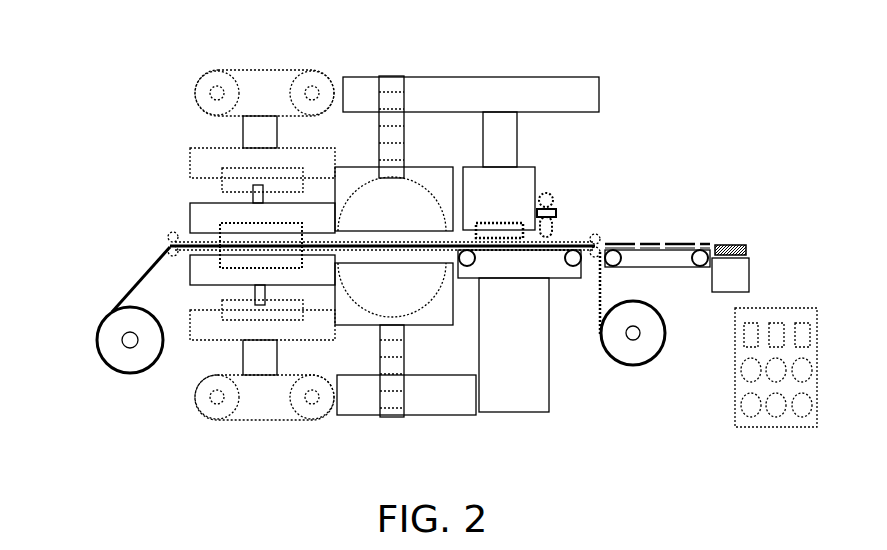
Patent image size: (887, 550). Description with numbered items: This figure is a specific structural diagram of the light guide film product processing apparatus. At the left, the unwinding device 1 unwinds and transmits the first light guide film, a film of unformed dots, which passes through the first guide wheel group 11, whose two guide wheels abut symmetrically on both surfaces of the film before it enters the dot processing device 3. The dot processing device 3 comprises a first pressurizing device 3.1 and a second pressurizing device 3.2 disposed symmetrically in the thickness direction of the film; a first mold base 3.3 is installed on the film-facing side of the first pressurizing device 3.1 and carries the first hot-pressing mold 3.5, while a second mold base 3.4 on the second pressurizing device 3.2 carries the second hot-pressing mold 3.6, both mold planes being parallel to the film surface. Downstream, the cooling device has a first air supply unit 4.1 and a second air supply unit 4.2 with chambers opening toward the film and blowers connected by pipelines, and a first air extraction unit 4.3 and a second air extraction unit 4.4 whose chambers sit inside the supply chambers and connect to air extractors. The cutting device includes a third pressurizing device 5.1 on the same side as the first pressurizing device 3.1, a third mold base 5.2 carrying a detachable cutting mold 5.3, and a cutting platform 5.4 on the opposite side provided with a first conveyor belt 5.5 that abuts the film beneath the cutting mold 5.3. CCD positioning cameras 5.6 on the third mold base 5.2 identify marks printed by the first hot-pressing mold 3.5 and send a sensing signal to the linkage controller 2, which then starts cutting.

The unwinding device 1 is at (115, 345).
The first guide wheel group 11 is at (170, 243).
The linkage controller 2 is at (797, 380).
The dot processing device 3 is at (293, 230).
The first pressurizing device 3.1 is at (248, 93).
The second pressurizing device 3.2 is at (252, 382).
The first mold base 3.3 is at (235, 210).
The second mold base 3.4 is at (210, 272).
The first hot-pressing mold 3.5 is at (230, 238).
The second hot-pressing mold 3.6 is at (235, 262).
The first air supply unit 4.1 is at (442, 182).
The second air supply unit 4.2 is at (347, 312).
The first air extraction unit 4.3 is at (392, 193).
The second air extraction unit 4.4 is at (408, 280).
The third pressurizing device 5.1 is at (505, 140).
The third mold base 5.2 is at (488, 195).
The cutting mold 5.3 is at (505, 232).
The cutting platform 5.4 is at (497, 272).
The first conveyor belt 5.5 is at (528, 255).
The CCD positioning camera 5.6 is at (555, 213).